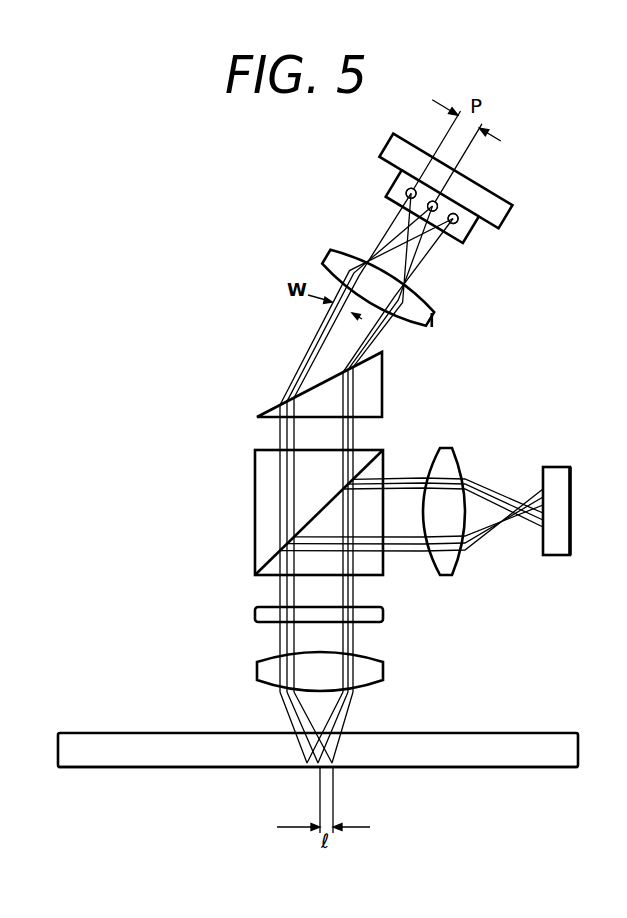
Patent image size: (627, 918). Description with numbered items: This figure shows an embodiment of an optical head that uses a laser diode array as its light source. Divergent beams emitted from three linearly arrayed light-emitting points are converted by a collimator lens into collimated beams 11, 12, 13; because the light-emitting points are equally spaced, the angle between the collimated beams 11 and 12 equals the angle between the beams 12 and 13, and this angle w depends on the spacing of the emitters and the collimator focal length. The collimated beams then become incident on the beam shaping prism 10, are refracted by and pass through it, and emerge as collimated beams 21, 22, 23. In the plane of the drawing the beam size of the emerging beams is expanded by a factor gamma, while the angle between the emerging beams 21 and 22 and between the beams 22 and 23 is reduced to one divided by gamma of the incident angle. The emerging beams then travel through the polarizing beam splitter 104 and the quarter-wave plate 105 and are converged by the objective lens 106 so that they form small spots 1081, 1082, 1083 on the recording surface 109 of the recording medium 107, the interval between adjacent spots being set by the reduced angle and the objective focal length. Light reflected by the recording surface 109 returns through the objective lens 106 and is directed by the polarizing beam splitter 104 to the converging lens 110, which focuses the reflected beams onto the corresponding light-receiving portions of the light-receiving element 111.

The beam shaping prism 10 is at (378, 386).
The collimated beam 11 is at (327, 312).
The collimated beam 12 is at (320, 340).
The collimated beam 13 is at (320, 358).
The emerging collimated beam 21 is at (280, 422).
The emerging collimated beam 22 is at (280, 430).
The emerging collimated beam 23 is at (280, 437).
The polarizing beam splitter 104 is at (263, 493).
The λ/4 plate 105 is at (256, 614).
The objective lens 106 is at (262, 672).
The recording medium 107 is at (95, 742).
The recording surface 109 is at (113, 767).
The small spot 1081 is at (335, 770).
The small spot 1082 is at (318, 766).
The small spot 1083 is at (306, 766).
The converging lens 110 is at (452, 448).
The light-receiving element 111 is at (560, 468).